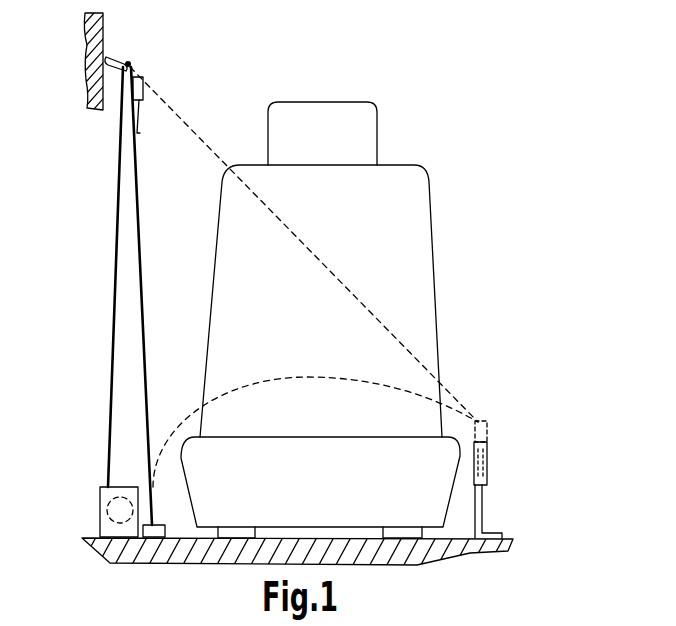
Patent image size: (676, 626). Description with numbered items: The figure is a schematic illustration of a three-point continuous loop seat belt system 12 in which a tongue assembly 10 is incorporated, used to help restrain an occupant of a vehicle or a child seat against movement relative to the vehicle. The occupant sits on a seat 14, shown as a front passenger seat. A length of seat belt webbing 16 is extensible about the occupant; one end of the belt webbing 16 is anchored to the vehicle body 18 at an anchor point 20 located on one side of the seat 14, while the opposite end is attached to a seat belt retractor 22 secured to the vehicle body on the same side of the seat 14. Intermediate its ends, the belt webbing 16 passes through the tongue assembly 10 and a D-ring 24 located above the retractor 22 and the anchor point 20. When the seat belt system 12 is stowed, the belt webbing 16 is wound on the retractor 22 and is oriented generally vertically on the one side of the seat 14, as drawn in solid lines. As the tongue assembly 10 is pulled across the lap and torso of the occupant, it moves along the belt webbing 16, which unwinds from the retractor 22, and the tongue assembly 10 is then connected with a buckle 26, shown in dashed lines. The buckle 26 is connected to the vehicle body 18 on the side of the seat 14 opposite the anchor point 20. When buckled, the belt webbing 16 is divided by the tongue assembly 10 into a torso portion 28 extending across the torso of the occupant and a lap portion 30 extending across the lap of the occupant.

The tongue assembly 10 is at (138, 88).
The seat belt system 12 is at (77, 296).
The seat 14 is at (403, 180).
The seat belt webbing 16 is at (88, 187).
The vehicle body 18 is at (113, 548).
The anchor point 20 is at (166, 527).
The seat belt retractor 22 is at (100, 495).
The D-ring 24 is at (122, 52).
The buckle 26 is at (487, 484).
The torso portion 28 is at (367, 300).
The lap portion 30 is at (340, 377).